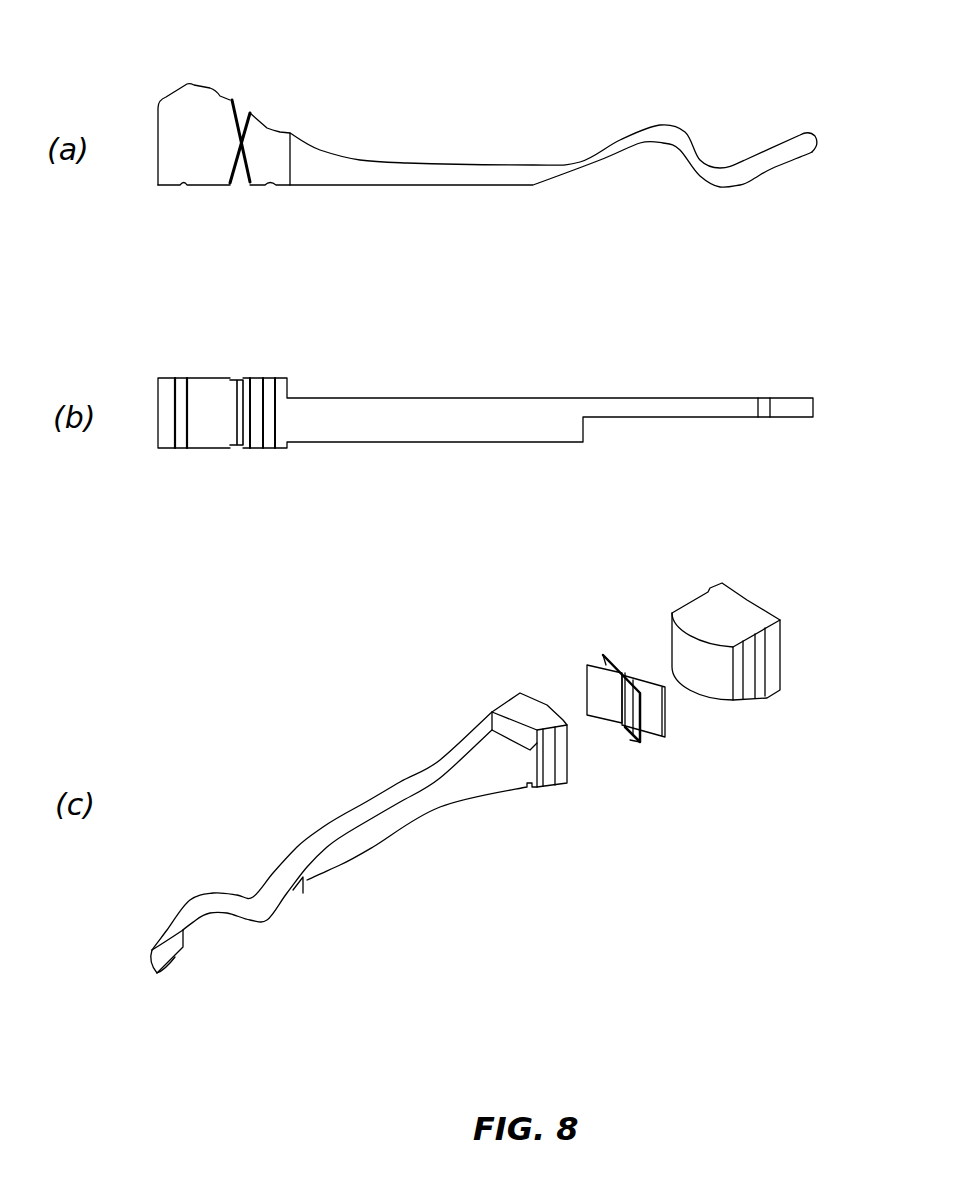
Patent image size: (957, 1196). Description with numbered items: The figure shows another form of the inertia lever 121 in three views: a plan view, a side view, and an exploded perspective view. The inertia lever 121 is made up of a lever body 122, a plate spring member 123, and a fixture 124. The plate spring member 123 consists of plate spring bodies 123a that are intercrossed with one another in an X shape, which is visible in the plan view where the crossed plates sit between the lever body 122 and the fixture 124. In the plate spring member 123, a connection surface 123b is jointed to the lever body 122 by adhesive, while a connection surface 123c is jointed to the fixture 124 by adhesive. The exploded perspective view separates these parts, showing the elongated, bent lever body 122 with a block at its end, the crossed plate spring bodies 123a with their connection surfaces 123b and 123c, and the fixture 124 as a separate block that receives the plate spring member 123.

The inertia lever 121 is at (382, 136).
The lever body 122 is at (503, 165).
The plate spring member 123 is at (242, 184).
The plate spring bodies 123a is at (600, 658).
The connection surface 123b is at (627, 727).
The connection surface 123c is at (615, 670).
The fixture 124 is at (195, 82).